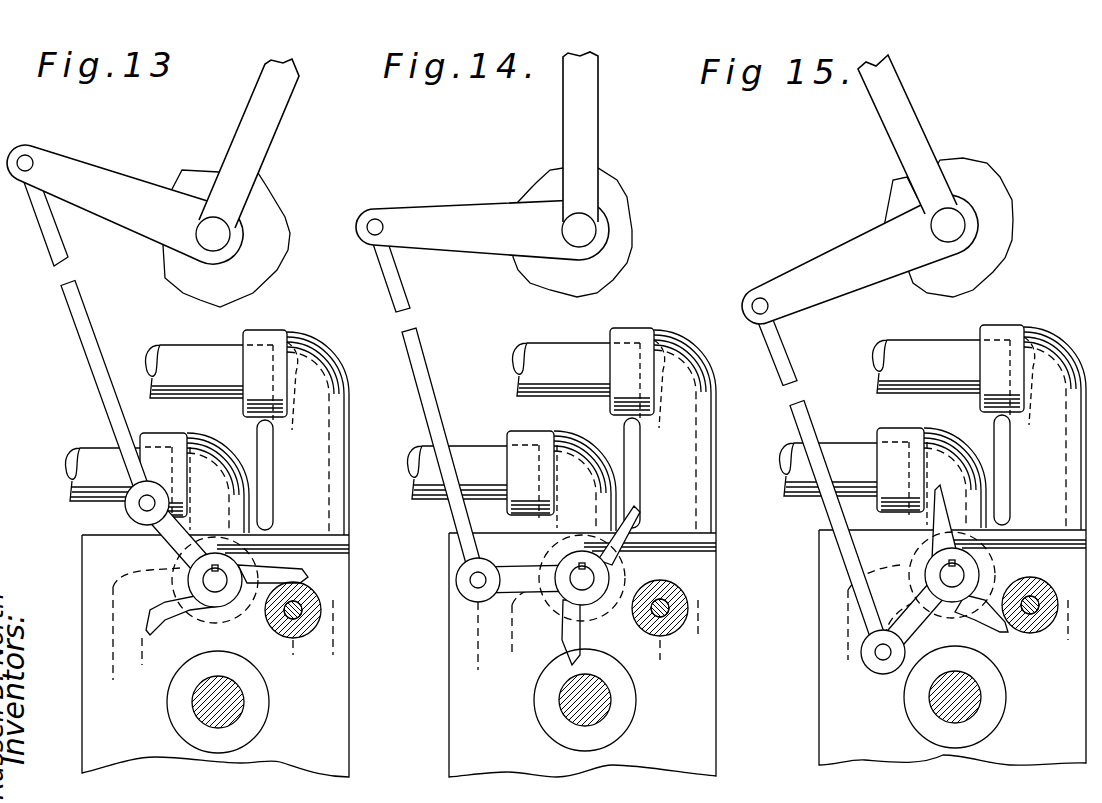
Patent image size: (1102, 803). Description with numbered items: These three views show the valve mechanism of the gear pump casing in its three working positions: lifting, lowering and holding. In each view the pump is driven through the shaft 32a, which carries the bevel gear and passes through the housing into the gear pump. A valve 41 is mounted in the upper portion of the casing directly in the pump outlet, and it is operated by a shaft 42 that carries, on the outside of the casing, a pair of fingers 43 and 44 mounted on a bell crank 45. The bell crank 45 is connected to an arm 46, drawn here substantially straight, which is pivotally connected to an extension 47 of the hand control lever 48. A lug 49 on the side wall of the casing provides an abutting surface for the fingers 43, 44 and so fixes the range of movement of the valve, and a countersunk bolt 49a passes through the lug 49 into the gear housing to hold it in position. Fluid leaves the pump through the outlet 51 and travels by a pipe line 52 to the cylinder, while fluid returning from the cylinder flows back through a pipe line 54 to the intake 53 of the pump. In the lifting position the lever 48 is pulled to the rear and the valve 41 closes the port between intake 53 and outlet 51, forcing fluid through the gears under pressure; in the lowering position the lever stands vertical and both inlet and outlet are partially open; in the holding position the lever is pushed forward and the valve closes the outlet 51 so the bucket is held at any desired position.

In FIG. 13, the shaft 32a is at (233, 717).
In FIG. 14, the shaft 32a is at (563, 710).
In FIG. 15, the shaft 32a is at (937, 697).
In FIG. 13, the valve 41 is at (220, 613).
In FIG. 14, the valve 41 is at (590, 617).
In FIG. 15, the valve 41 is at (952, 575).
In FIG. 13, the shaft 42 is at (203, 580).
In FIG. 14, the shaft 42 is at (557, 598).
In FIG. 15, the shaft 42 is at (952, 575).
In FIG. 13, the finger 43 is at (173, 613).
In FIG. 14, the finger 43 is at (567, 643).
In FIG. 15, the finger 43 is at (1007, 633).
In FIG. 13, the finger 44 is at (305, 570).
In FIG. 14, the finger 44 is at (650, 520).
In FIG. 15, the finger 44 is at (927, 520).
In FIG. 13, the bell crank 45 is at (180, 545).
In FIG. 14, the bell crank 45 is at (520, 552).
In FIG. 15, the bell crank 45 is at (980, 640).
In FIG. 13, the arm 46 is at (90, 362).
In FIG. 14, the arm 46 is at (417, 368).
In FIG. 15, the arm 46 is at (780, 363).
In FIG. 13, the extension 47 is at (108, 178).
In FIG. 14, the extension 47 is at (428, 217).
In FIG. 15, the extension 47 is at (800, 270).
In FIG. 13, the lever 48 is at (260, 127).
In FIG. 14, the lever 48 is at (585, 115).
In FIG. 15, the lever 48 is at (907, 123).
In FIG. 13, the lug 49 is at (313, 638).
In FIG. 14, the lug 49 is at (670, 636).
In FIG. 15, the lug 49 is at (1037, 577).
In FIG. 13, the countersunk bolt 49a is at (293, 610).
In FIG. 14, the countersunk bolt 49a is at (660, 607).
In FIG. 13, the outlet 51 is at (190, 427).
In FIG. 14, the outlet 51 is at (532, 437).
In FIG. 15, the outlet 51 is at (902, 428).
In FIG. 13, the pipe line 52 is at (63, 452).
In FIG. 14, the pipe line 52 is at (465, 452).
In FIG. 15, the pipe line 52 is at (833, 445).
In FIG. 13, the intake 53 is at (333, 435).
In FIG. 14, the intake 53 is at (717, 420).
In FIG. 15, the intake 53 is at (952, 436).
In FIG. 13, the pipe line 54 is at (183, 350).
In FIG. 14, the pipe line 54 is at (550, 355).
In FIG. 15, the pipe line 54 is at (922, 343).